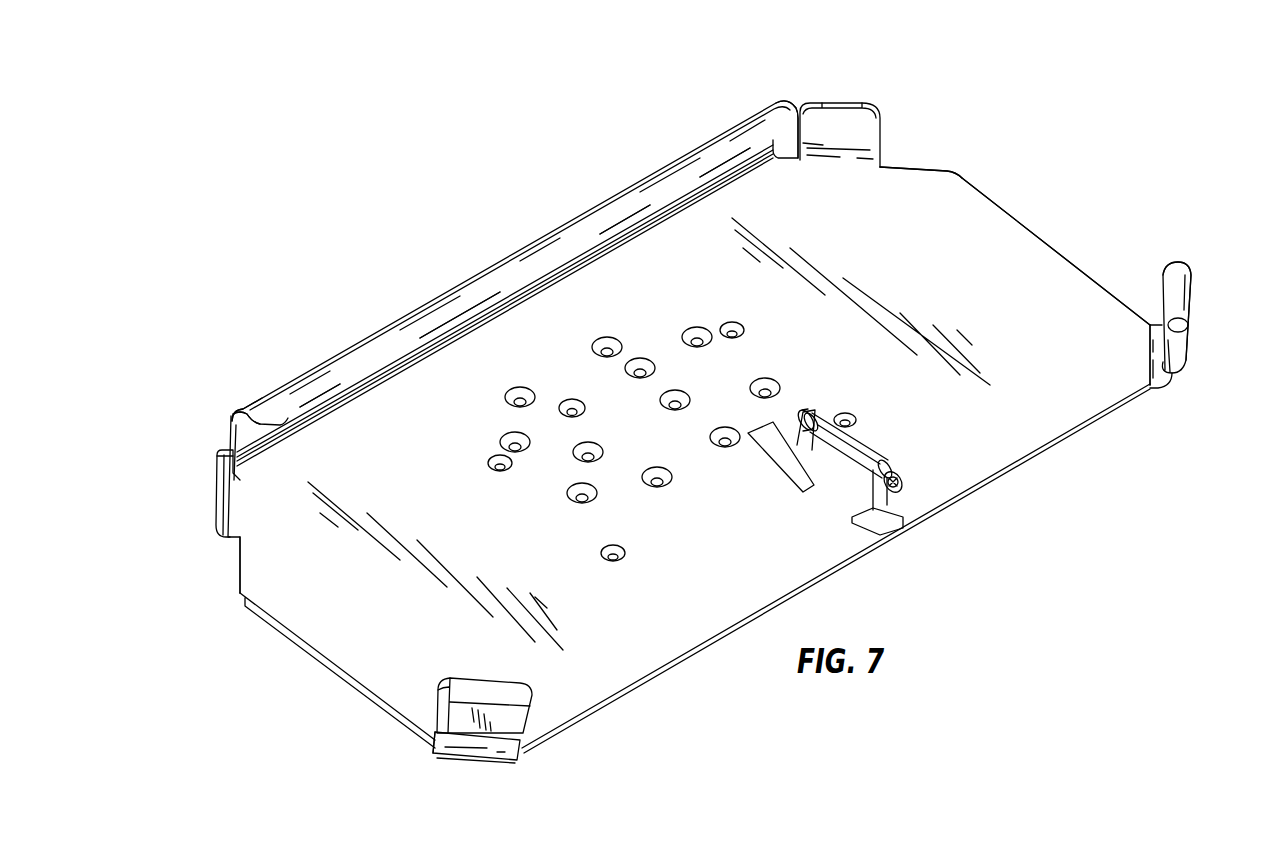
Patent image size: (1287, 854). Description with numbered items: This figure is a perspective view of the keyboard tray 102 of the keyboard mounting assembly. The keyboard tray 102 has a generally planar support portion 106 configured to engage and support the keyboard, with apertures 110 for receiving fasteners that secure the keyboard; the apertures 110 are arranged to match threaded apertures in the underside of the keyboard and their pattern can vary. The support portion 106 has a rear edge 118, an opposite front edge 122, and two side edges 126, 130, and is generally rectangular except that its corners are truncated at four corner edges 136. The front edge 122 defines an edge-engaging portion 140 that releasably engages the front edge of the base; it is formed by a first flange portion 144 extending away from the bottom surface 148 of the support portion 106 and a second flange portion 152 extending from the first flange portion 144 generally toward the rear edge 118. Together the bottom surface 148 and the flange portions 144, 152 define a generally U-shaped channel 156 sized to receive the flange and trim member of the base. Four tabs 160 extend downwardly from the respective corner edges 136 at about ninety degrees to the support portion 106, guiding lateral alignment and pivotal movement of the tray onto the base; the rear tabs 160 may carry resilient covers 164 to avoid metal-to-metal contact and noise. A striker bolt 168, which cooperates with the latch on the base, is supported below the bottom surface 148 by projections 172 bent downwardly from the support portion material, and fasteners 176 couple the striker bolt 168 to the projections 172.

The keyboard tray 102 is at (1030, 187).
The support portion 106 is at (1048, 283).
The apertures 110 is at (685, 335).
The rear edge 118 is at (1010, 478).
The front edge 122 is at (562, 215).
The side edge 126 is at (280, 630).
The side edge 130 is at (1033, 232).
The corner edges 136 is at (915, 167).
The edge-engaging portion 140 is at (793, 98).
The first flange portion 144 is at (228, 430).
The bottom surface 148 is at (519, 532).
The second flange portion 152 is at (408, 335).
The U-shaped channel 156 is at (249, 438).
The tabs 160 is at (838, 110).
The covers 164 is at (1180, 288).
The striker bolt 168 is at (857, 448).
The projections 172 is at (787, 460).
The fasteners 176 is at (802, 408).